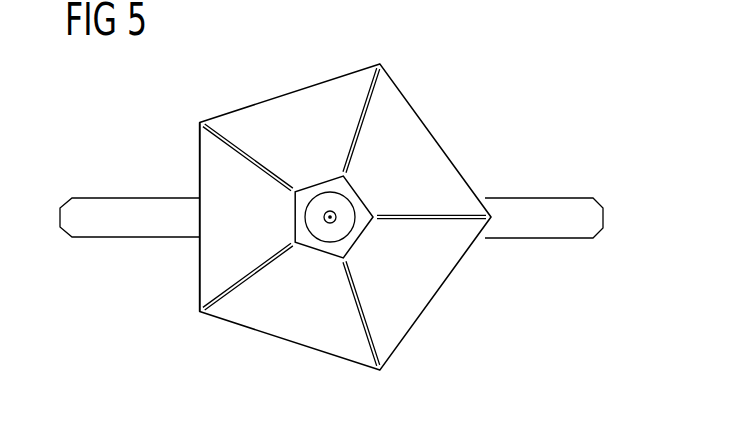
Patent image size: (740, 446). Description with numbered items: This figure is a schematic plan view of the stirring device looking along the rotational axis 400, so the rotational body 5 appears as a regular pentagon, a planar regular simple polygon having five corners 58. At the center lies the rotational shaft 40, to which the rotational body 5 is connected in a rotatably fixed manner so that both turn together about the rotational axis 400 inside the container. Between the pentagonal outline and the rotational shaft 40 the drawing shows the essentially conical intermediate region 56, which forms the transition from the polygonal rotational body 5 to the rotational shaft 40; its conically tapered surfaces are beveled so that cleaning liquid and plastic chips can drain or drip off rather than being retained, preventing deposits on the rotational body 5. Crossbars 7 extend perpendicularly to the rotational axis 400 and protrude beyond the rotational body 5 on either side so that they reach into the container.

The rotational body 5 is at (440, 138).
The crossbars 7 is at (603, 218).
The rotational shaft 40 is at (324, 216).
The rotational axis 400 is at (330, 222).
The conical intermediate region 56 is at (420, 280).
The corners 58 is at (199, 122).